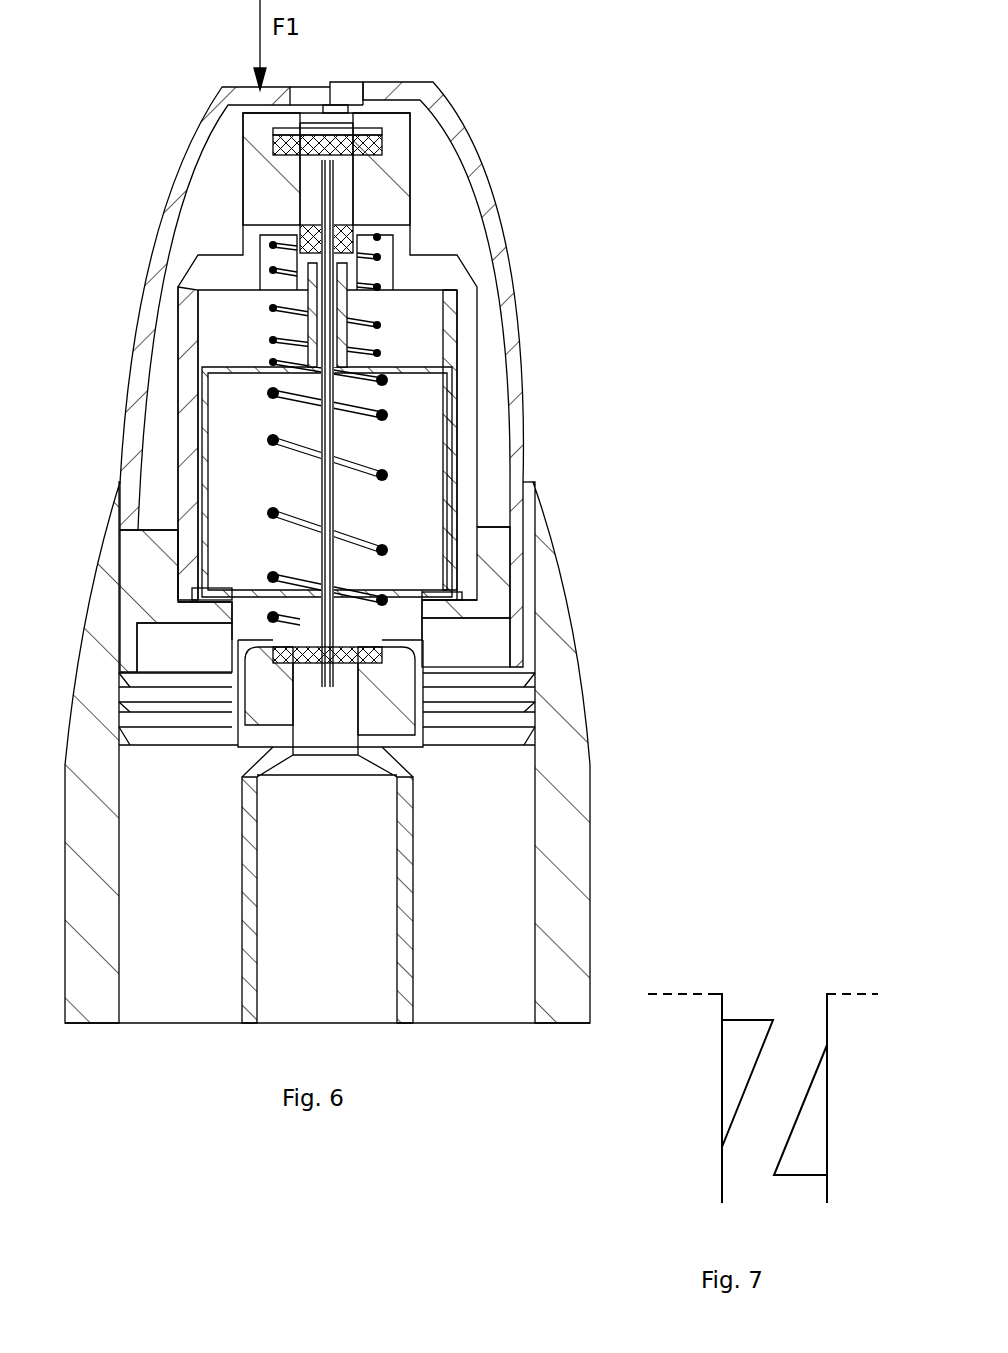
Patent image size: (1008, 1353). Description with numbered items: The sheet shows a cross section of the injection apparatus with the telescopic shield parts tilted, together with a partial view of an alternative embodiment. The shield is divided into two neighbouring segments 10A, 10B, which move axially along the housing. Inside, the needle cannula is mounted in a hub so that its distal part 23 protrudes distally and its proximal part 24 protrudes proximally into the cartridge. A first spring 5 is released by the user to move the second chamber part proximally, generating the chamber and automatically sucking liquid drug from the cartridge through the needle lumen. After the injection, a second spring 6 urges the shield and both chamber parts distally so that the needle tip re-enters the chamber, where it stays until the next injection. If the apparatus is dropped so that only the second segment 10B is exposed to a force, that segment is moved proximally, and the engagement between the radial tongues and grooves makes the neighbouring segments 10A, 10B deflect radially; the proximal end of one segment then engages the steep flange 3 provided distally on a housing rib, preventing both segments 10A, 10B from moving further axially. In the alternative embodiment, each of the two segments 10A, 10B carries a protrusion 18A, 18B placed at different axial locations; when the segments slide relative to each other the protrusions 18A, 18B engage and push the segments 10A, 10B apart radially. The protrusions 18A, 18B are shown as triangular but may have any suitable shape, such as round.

In FIG. 6, the first segment 10A is at (492, 220).
In FIG. 7, the first segment 10A is at (680, 1020).
In FIG. 6, the second segment 10B is at (153, 253).
In FIG. 7, the second segment 10B is at (853, 1025).
In FIG. 6, the steep flange 3 is at (530, 700).
In FIG. 6, the first spring 5 is at (377, 324).
In FIG. 6, the second spring 6 is at (383, 413).
In FIG. 6, the distal part 23 is at (328, 197).
In FIG. 6, the proximal part 24 is at (330, 682).
In FIG. 7, the protrusion 18A is at (748, 1044).
In FIG. 7, the protrusion 18B is at (795, 1155).